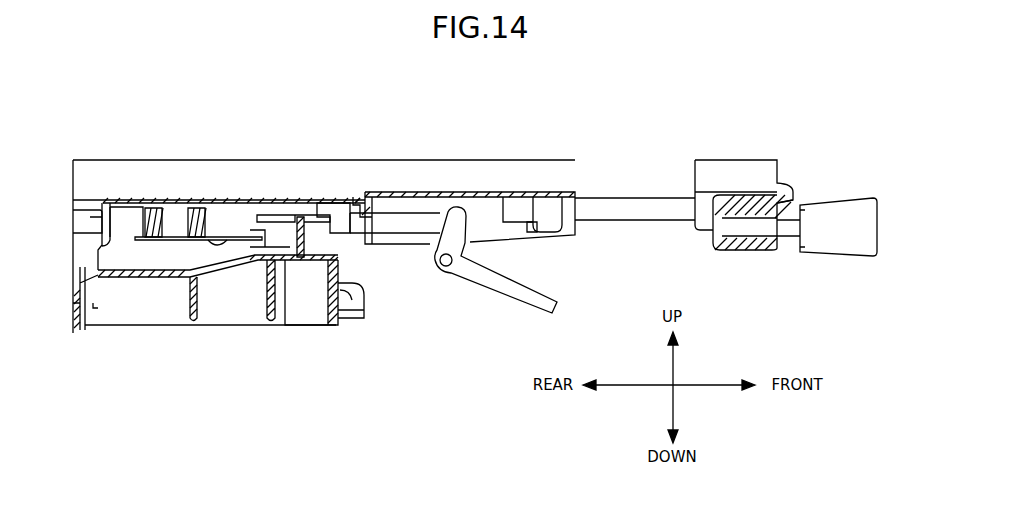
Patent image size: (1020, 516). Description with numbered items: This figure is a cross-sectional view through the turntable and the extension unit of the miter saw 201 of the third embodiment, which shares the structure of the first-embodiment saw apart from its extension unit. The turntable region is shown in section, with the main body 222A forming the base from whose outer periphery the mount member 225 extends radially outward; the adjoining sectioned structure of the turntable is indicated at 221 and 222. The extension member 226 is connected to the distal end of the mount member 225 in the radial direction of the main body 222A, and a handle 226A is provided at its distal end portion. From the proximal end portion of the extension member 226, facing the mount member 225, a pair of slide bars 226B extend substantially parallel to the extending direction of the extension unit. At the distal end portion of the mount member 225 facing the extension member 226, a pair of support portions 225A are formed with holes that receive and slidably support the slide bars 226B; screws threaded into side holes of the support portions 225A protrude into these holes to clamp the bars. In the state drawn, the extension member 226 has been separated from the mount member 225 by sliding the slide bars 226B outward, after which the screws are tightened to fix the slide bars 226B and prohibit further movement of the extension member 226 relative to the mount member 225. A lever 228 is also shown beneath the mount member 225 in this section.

The miter saw 201 is at (551, 123).
The casing body 221 is at (300, 258).
The frame 222 is at (343, 160).
The main body 222A is at (254, 170).
The mount member 225 is at (461, 172).
The support portions 225A is at (548, 207).
The extension member 226 is at (733, 162).
The handle 226A is at (838, 240).
The slide bars 226B is at (630, 200).
The lever 228 is at (462, 280).